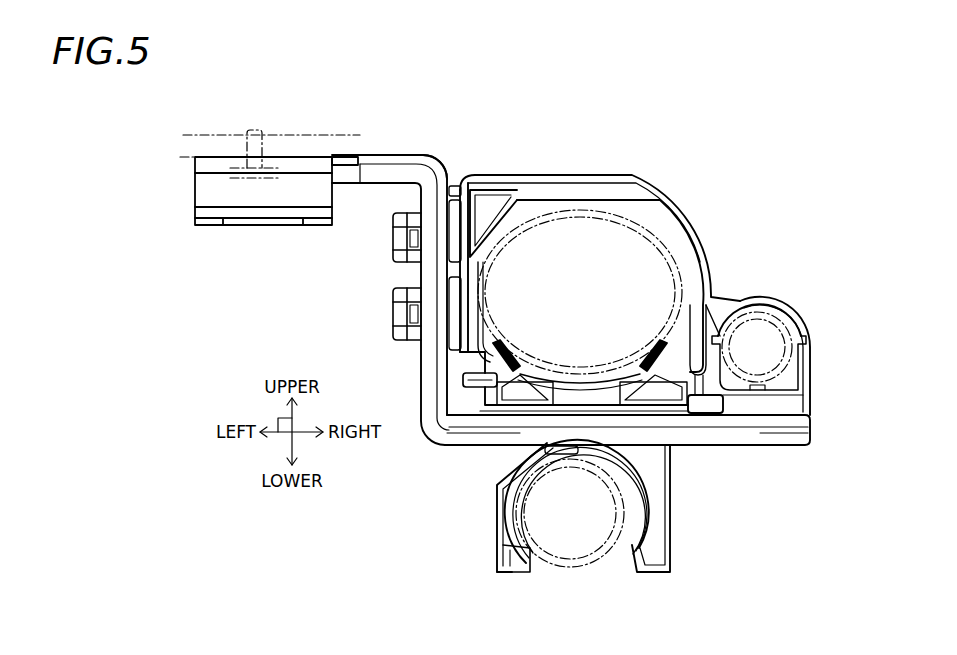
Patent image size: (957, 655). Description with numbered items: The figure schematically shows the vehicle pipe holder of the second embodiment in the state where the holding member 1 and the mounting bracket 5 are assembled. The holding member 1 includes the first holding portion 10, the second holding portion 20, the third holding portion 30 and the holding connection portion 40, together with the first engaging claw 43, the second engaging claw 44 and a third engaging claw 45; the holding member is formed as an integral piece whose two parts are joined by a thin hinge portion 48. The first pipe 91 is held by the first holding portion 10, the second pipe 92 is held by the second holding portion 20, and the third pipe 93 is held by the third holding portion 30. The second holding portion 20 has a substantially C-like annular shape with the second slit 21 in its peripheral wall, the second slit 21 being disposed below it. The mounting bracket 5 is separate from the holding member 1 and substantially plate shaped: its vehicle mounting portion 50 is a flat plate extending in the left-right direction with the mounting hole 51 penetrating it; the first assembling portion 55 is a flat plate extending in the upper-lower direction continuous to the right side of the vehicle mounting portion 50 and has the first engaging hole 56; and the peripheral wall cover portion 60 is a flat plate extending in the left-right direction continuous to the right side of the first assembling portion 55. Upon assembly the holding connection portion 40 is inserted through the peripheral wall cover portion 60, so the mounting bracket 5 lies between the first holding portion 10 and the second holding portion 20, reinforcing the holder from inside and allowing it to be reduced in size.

The holding member 1 is at (579, 384).
The mounting bracket 5 is at (270, 198).
The first holding portion 10 is at (547, 271).
The second holding portion 20 is at (615, 541).
The second slit 21 is at (562, 571).
The third holding portion 30 is at (788, 336).
The holding connection portion 40 is at (634, 459).
The first engaging claw 43 is at (394, 236).
The second engaging claw 44 is at (397, 311).
The third engaging claw 45 is at (809, 432).
The hinge portion 48 is at (465, 376).
The vehicle mounting portion 50 is at (220, 162).
The mounting hole 51 is at (265, 165).
The first assembling portion 55 is at (445, 202).
The first engaging hole 56 is at (382, 285).
The peripheral wall cover portion 60 is at (497, 434).
The first pipe 91 is at (664, 237).
The second pipe 92 is at (590, 556).
The third pipe 93 is at (768, 318).